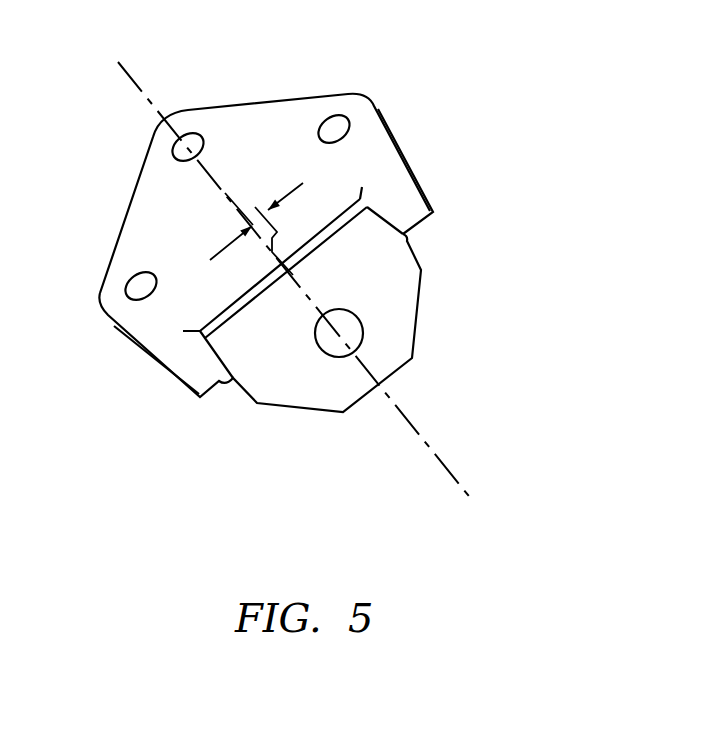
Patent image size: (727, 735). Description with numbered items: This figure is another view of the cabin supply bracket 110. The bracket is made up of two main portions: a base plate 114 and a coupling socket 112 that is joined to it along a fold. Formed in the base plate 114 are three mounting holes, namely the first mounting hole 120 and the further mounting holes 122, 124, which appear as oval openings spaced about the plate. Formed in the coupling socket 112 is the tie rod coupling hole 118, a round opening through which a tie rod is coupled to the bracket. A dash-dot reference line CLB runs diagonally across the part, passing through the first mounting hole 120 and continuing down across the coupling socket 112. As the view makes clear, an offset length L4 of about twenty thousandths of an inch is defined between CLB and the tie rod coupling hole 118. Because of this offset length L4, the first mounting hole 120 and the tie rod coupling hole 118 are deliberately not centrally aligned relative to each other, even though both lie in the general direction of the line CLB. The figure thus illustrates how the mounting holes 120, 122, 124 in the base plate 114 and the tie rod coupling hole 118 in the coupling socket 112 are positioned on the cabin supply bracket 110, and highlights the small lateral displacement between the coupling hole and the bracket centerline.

The cabin supply bracket 110 is at (311, 258).
The coupling socket 112 is at (277, 398).
The base plate 114 is at (268, 122).
The tie rod coupling hole 118 is at (362, 322).
The first mounting hole 120 is at (187, 135).
The mounting hole 122 is at (135, 295).
The mounting hole 124 is at (338, 118).
The centerline CLB is at (148, 95).
The offset length L4 is at (289, 195).